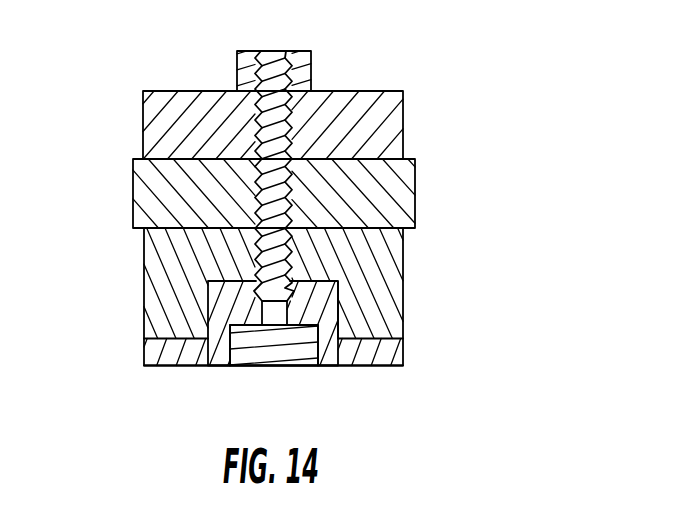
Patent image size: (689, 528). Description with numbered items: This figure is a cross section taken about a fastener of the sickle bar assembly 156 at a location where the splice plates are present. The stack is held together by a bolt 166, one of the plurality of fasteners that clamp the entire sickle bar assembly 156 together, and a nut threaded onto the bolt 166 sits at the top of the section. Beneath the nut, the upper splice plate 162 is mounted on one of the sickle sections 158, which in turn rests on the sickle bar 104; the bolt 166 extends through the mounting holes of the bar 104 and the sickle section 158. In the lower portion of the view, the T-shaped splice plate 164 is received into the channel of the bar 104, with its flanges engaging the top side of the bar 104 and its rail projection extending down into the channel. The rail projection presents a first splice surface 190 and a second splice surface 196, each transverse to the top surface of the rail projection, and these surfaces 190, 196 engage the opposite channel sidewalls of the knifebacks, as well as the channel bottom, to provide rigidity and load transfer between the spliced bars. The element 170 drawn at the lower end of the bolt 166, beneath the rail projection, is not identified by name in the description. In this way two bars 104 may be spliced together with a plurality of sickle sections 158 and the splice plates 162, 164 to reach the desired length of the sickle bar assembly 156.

The sickle bar 104 is at (173, 258).
The sickle bar assembly 156 is at (467, 130).
The sickle section 158 is at (160, 187).
The upper splice plate 162 is at (207, 127).
The splice plate 164 is at (368, 353).
The bolt 166 is at (275, 63).
The insert 170 is at (258, 353).
The first splice surface 190 is at (207, 313).
The second splice surface 196 is at (340, 318).